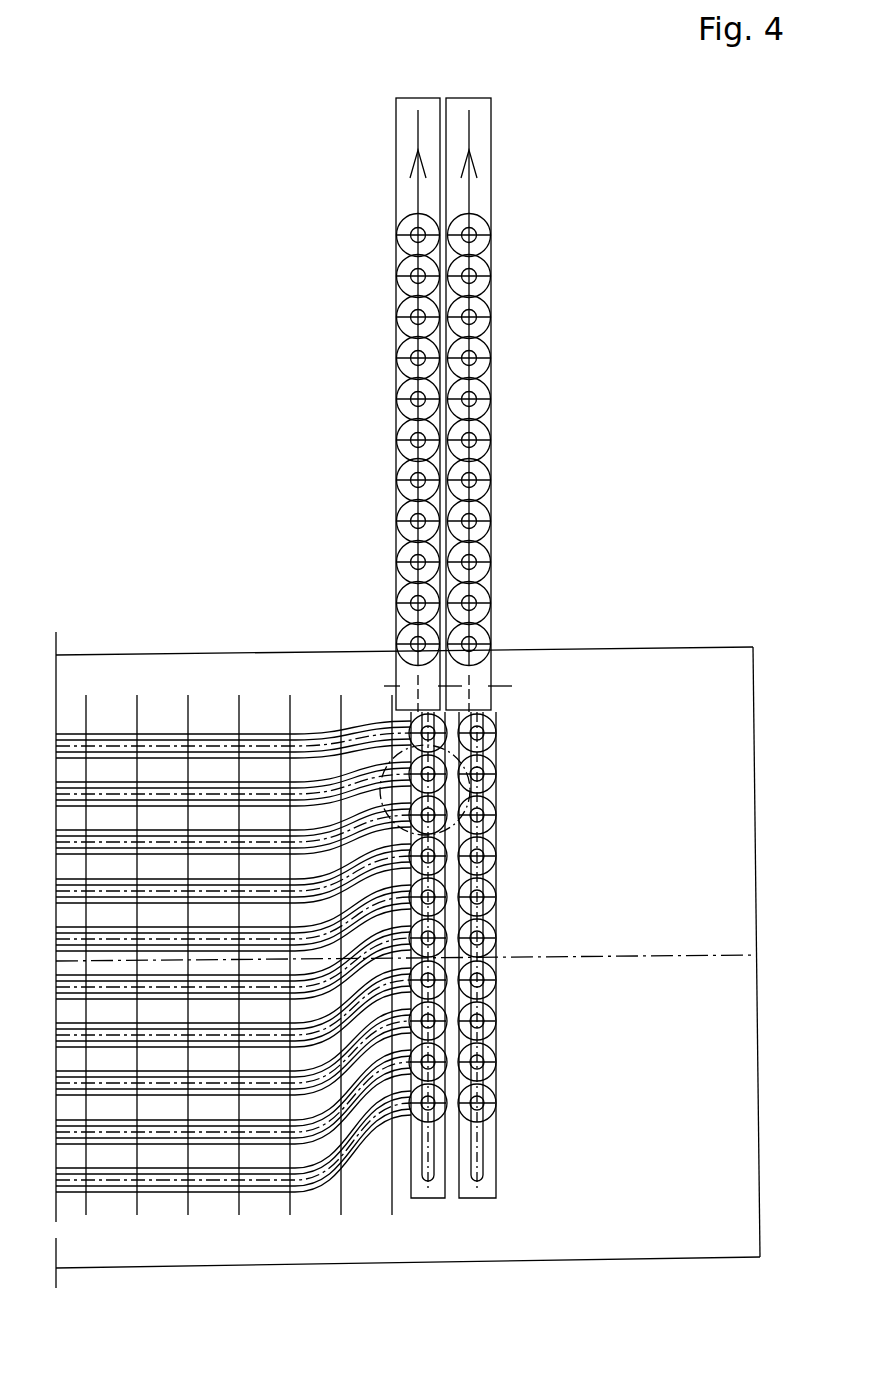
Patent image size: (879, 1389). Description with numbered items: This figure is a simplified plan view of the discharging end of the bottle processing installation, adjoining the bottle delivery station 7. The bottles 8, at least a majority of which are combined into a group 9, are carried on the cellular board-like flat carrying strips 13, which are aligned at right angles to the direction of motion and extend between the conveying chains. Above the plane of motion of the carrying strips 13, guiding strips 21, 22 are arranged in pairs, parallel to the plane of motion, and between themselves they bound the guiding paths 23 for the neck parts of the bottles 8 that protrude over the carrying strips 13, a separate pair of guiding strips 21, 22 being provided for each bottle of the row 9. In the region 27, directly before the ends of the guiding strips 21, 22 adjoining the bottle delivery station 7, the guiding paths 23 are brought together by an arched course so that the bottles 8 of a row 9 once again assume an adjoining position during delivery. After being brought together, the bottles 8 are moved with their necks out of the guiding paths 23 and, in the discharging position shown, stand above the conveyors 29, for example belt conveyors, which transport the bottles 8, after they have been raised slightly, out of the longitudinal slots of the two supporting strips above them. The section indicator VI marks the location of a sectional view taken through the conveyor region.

The bottle delivery station 7 is at (514, 1182).
The bottles 8 is at (489, 739).
The group of bottles 9 is at (505, 1033).
The carrying strips 13 is at (475, 1187).
The guiding strip 21 is at (233, 932).
The guiding strip 22 is at (159, 735).
The guiding paths 23 is at (211, 745).
The region 27 is at (368, 1150).
The conveyors 29 is at (400, 300).
The section view VI is at (481, 774).